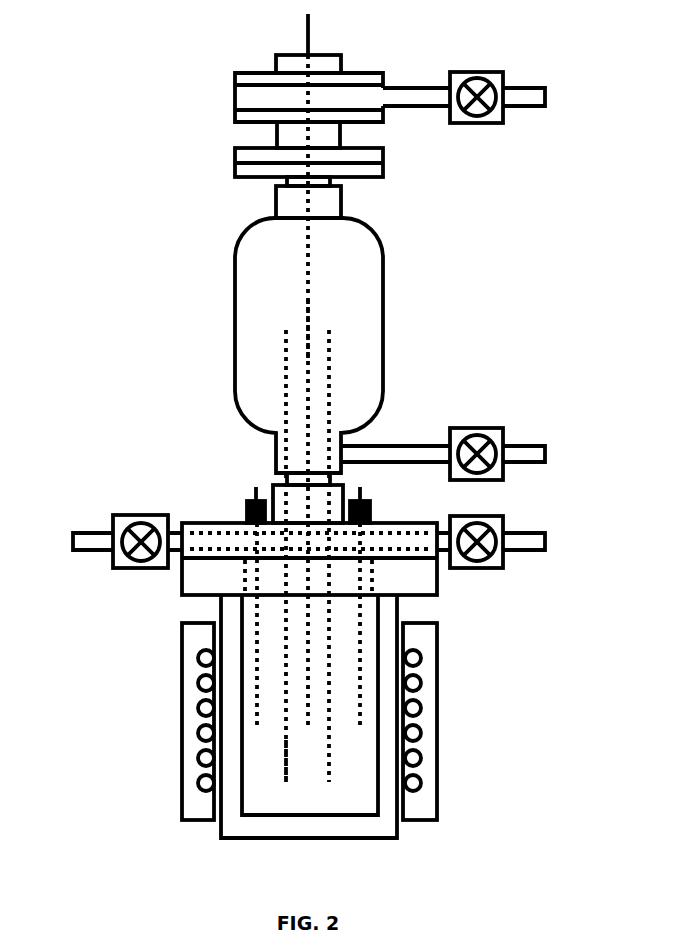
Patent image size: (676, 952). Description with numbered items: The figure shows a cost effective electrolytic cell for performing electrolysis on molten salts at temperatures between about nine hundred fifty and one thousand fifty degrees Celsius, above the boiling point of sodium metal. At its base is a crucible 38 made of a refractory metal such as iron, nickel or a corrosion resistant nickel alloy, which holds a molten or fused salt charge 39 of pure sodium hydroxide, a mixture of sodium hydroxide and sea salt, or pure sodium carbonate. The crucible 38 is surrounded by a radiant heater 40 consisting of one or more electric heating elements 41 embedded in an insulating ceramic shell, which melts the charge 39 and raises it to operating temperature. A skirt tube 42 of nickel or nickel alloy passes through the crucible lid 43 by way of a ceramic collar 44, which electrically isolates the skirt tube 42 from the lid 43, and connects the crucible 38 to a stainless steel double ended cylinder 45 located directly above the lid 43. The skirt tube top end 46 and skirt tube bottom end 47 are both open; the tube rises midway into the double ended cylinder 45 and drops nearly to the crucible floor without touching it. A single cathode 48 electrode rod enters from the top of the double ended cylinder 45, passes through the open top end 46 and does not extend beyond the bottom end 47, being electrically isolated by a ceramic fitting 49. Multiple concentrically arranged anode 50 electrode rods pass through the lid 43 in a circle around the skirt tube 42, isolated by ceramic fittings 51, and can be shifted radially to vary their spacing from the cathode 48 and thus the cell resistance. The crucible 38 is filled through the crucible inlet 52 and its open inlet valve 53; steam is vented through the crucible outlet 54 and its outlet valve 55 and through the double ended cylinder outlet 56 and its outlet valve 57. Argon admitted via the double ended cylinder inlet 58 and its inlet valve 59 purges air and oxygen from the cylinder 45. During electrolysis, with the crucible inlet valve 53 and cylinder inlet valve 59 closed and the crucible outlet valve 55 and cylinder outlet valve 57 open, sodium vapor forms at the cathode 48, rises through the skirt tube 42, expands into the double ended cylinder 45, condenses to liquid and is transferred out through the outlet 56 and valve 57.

The crucible 38 is at (218, 611).
The molten or fused salt charge 39 is at (347, 746).
The radiant heater 40 is at (180, 652).
The electric heating elements 41 is at (197, 685).
The skirt tube 42 is at (283, 373).
The crucible lid 43 is at (410, 522).
The ceramic collar 44 is at (268, 484).
The double ended cylinder 45 is at (232, 263).
The skirt tube top end 46 is at (318, 328).
The skirt tube bottom end 47 is at (303, 779).
The cathode electrode rod 48 is at (305, 47).
The ceramic fitting 49 is at (274, 137).
The anode electrode rods 50 is at (245, 495).
The ceramic fittings 51 is at (373, 508).
The crucible inlet 52 is at (83, 530).
The valve 1 53 is at (140, 512).
The crucible outlet 54 is at (526, 553).
The valve 2 55 is at (477, 570).
The double ended cylinder outlet 56 is at (528, 445).
The valve 3 57 is at (477, 426).
The double ended cylinder inlet 58 is at (528, 108).
The valve 4 59 is at (477, 125).